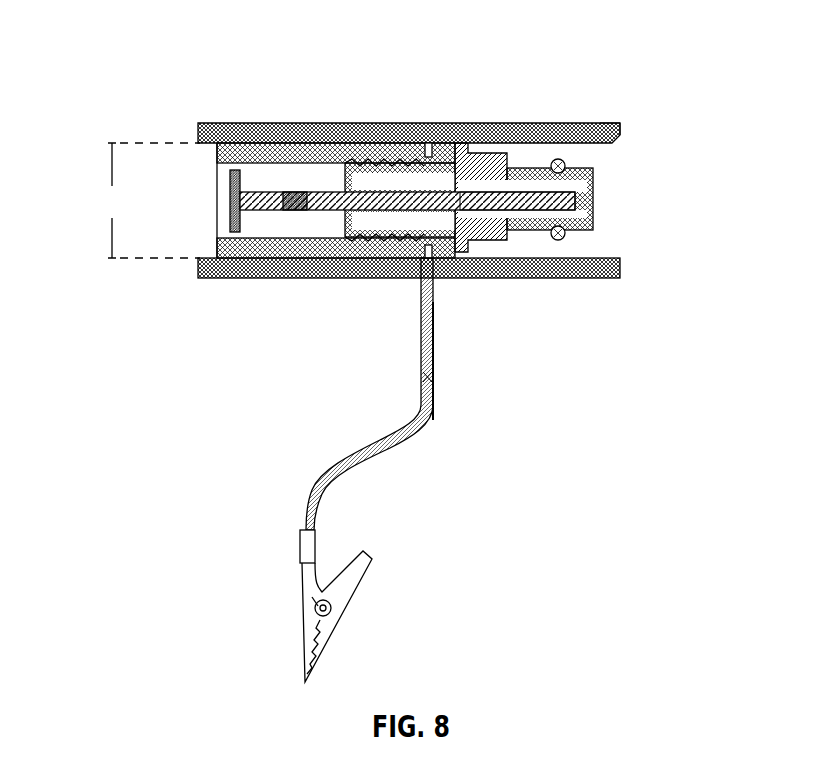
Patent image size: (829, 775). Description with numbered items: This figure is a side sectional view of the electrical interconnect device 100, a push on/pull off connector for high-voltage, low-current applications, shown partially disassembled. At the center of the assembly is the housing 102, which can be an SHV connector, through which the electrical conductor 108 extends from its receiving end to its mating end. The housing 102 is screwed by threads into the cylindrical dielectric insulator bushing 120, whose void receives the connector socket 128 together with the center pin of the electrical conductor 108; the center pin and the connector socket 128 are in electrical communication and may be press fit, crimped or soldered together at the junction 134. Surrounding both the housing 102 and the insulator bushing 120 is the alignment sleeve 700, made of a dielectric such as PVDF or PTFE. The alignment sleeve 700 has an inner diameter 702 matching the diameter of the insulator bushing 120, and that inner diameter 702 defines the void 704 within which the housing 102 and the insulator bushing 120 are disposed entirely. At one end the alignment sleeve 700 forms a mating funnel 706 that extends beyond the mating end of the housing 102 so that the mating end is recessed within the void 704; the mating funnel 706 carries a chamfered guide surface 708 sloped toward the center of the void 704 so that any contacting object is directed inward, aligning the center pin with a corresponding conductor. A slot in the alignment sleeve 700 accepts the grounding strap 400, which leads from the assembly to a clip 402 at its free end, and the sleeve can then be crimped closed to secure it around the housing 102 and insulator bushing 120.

The electrical interconnect device 100 is at (138, 55).
The housing 102 is at (490, 232).
The electrical conductor 108 is at (547, 198).
The insulator bushing 120 is at (233, 248).
The connector socket 128 is at (262, 200).
The junction 134 is at (305, 210).
The grounding strap 400 is at (428, 283).
The wire 402 is at (438, 410).
The alignment sleeve 700 is at (275, 130).
The inner diameter 702 is at (147, 200).
The void 704 is at (600, 245).
The mating funnel 706 is at (623, 126).
The chamfered guide surface 708 is at (612, 138).